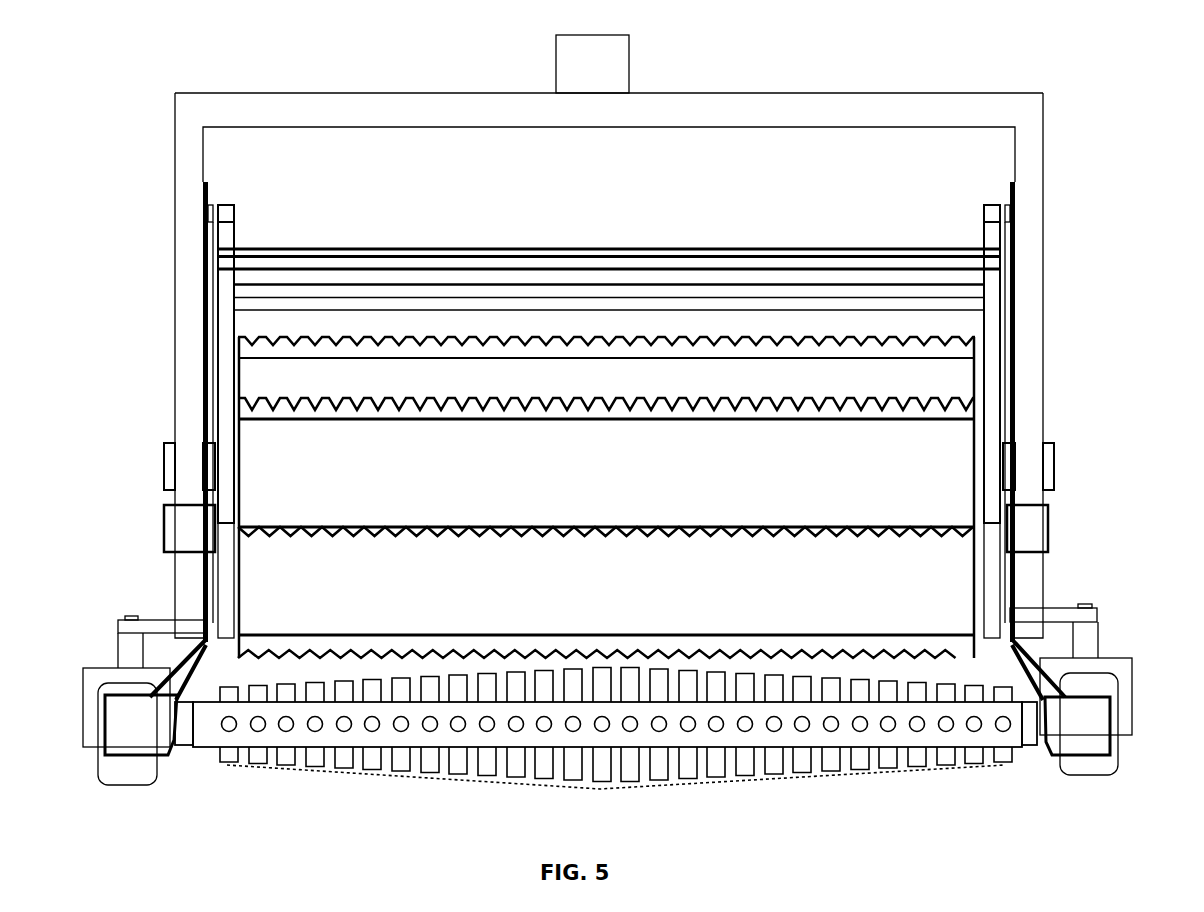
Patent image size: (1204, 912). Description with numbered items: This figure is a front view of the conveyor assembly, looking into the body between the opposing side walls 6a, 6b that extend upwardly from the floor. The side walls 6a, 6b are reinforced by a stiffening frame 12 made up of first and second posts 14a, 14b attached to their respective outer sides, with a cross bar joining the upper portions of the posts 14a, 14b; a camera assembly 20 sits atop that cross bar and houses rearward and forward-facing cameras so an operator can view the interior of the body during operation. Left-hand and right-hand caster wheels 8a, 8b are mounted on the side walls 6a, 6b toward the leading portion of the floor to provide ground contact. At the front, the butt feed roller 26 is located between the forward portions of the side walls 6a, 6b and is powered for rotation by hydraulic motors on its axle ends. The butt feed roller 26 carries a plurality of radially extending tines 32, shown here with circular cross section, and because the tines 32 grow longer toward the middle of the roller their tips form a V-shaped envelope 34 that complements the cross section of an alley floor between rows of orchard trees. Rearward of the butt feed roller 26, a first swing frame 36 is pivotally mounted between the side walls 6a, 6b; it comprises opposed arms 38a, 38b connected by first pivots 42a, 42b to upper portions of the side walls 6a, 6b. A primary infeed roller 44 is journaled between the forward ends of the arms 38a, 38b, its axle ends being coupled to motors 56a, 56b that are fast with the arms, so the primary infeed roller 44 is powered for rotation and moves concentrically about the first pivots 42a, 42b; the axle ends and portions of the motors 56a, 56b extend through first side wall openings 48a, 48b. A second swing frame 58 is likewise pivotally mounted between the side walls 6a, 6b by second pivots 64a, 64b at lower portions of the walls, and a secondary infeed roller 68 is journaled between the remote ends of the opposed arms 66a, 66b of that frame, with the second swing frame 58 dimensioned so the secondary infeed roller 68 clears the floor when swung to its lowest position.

The camera assembly 20 is at (590, 70).
The stiffening frame 12 is at (526, 124).
The first post 14a is at (1028, 370).
The second post 14b is at (197, 368).
The side wall 6a is at (1012, 183).
The side wall 6b is at (205, 183).
The first pivot 42a is at (994, 215).
The first pivot 42b is at (224, 213).
The arm 38a is at (992, 237).
The arm 38b is at (224, 237).
The first swing frame 36 is at (688, 245).
The second swing frame 58 is at (520, 278).
The secondary infeed roller 68 is at (615, 392).
The primary infeed roller 44 is at (605, 605).
The first side wall opening 48a is at (1012, 487).
The first side wall opening 48b is at (207, 475).
The motor 56a is at (1035, 517).
The motor 56b is at (180, 513).
The second pivot 64a is at (1003, 620).
The second pivot 64b is at (215, 613).
The opposed arm 66a is at (995, 585).
The opposed arm 66b is at (228, 593).
The caster wheel 8a is at (1103, 680).
The caster wheel 8b is at (112, 678).
The butt feed roller 26 is at (410, 742).
The tines 32 is at (547, 768).
The V-shaped envelope 34 is at (606, 790).